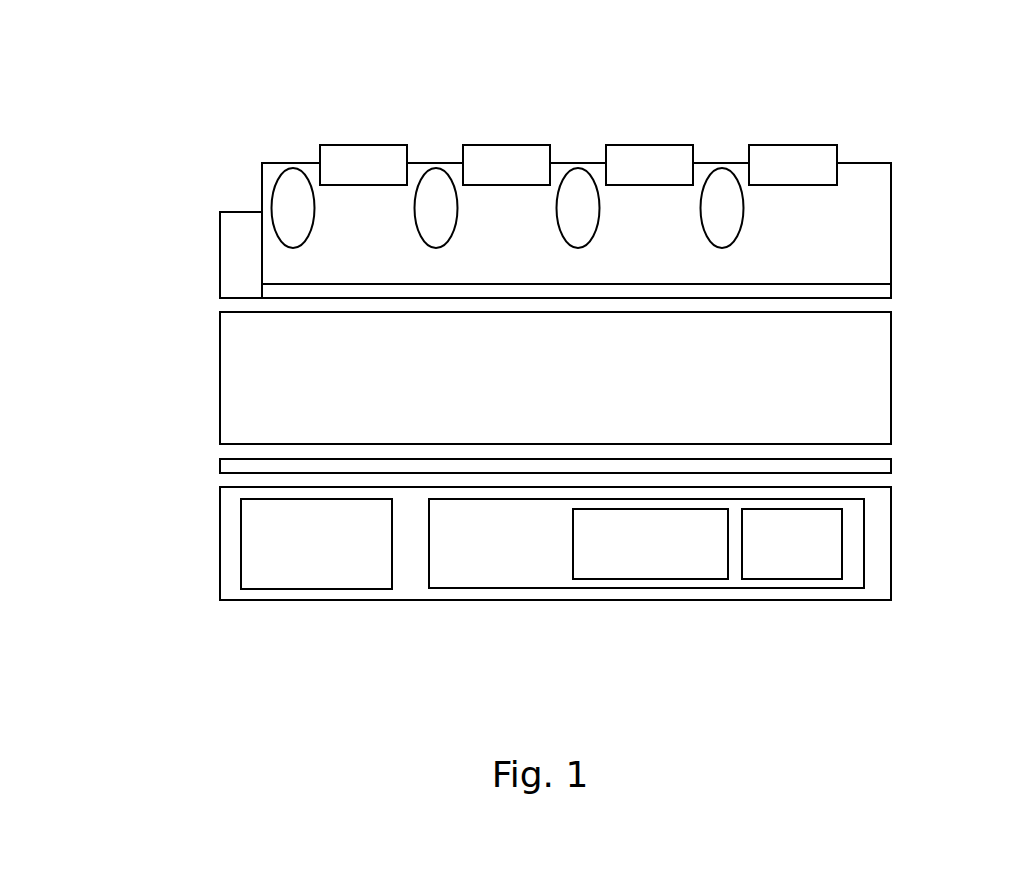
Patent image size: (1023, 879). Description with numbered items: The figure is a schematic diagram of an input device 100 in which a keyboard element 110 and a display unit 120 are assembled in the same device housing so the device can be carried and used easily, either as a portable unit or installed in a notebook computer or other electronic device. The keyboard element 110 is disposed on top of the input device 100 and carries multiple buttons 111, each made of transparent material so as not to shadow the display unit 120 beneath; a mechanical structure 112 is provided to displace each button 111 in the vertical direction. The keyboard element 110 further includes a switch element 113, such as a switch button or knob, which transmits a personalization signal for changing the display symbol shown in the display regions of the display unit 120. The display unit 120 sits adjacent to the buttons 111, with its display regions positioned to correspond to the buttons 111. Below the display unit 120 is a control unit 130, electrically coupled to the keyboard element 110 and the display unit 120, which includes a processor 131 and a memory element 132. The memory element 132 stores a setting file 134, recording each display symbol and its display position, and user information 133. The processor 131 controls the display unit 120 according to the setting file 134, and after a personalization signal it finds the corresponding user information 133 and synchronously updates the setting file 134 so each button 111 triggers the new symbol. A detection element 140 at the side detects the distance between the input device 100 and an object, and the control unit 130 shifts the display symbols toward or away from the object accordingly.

The input device 100 is at (991, 73).
The keyboard element 110 is at (880, 233).
The button 111 is at (363, 158).
The mechanical structure 112 is at (291, 181).
The switch element 113 is at (792, 158).
The display unit 120 is at (881, 387).
The control unit 130 is at (880, 537).
The processor 131 is at (315, 589).
The memory element 132 is at (488, 589).
The user information 133 is at (643, 579).
The setting file 134 is at (783, 579).
The detection element 140 is at (235, 252).